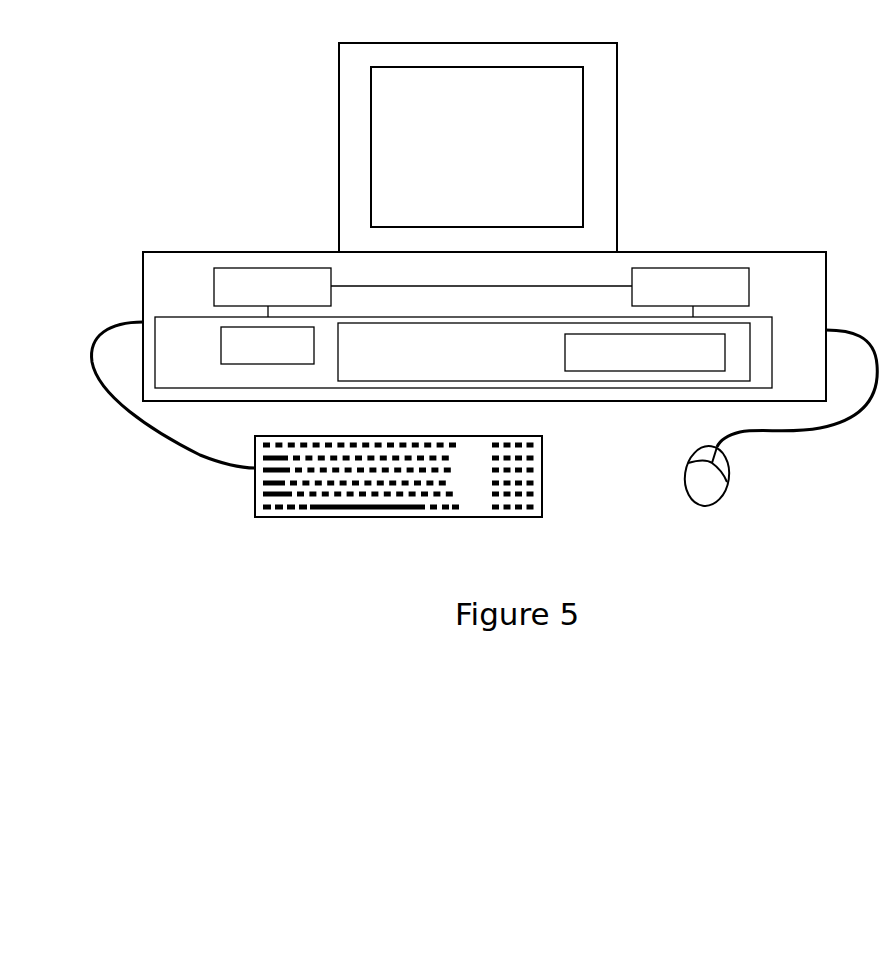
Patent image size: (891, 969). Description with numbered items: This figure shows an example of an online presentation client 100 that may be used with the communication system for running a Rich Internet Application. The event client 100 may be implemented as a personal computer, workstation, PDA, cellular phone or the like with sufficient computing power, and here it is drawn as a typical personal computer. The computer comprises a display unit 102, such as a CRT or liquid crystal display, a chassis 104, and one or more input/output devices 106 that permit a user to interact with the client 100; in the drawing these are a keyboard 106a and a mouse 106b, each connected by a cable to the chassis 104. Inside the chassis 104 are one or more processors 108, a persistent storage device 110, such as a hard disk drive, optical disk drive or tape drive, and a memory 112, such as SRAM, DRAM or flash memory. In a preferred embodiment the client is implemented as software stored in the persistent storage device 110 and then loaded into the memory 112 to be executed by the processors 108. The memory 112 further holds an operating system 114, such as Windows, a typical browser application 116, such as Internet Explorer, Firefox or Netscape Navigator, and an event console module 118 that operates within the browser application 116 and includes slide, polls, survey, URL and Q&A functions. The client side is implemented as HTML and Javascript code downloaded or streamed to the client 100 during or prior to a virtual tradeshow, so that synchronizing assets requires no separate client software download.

The online presentation client 100 is at (617, 112).
The display unit 102 is at (452, 153).
The chassis 104 is at (771, 287).
The input/output devices 106 is at (112, 417).
The keyboard 106a is at (542, 468).
The mouse 106b is at (678, 488).
The processors 108 is at (244, 302).
The persistent storage device 110 is at (665, 302).
The memory 112 is at (157, 352).
The operating system 114 is at (241, 359).
The browser application 116 is at (392, 361).
The event console module 118 is at (629, 366).